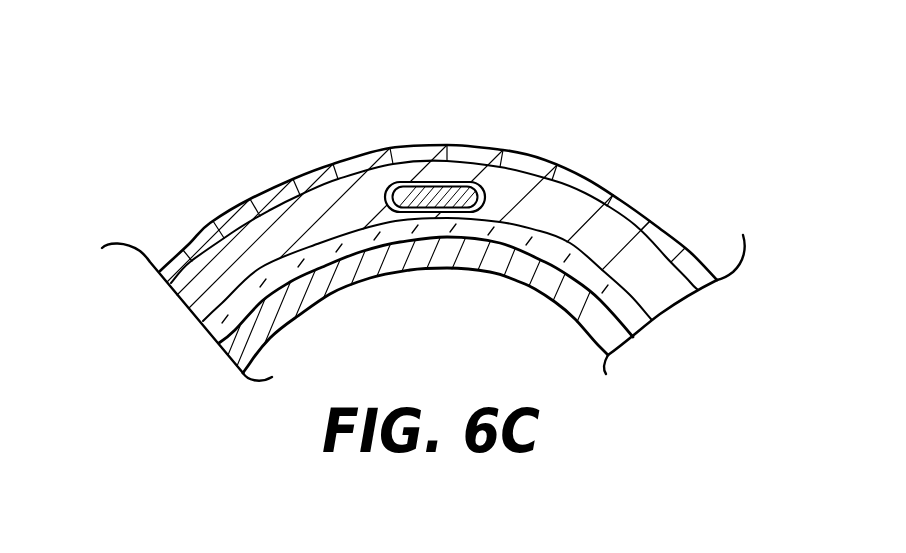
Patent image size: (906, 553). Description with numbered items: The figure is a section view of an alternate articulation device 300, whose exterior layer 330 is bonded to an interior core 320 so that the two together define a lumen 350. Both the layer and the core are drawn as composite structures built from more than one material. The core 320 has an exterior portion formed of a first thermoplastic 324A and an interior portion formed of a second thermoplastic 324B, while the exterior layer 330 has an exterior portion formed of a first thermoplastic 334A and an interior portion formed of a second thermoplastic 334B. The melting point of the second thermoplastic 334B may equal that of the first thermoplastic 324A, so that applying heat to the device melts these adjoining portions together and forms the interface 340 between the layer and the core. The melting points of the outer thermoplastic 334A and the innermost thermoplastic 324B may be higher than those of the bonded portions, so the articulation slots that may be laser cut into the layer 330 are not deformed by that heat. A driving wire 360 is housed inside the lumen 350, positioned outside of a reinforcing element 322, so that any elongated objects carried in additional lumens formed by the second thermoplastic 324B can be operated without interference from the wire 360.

The articulation device 300 is at (556, 46).
The interior core 320 is at (618, 334).
The reinforcing element 322 is at (214, 341).
The first thermoplastic 324A is at (228, 316).
The second thermoplastic 324B is at (334, 280).
The exterior layer 330 is at (643, 190).
The first thermoplastic 334A is at (190, 232).
The second thermoplastic 334B is at (198, 326).
The interface 340 is at (646, 304).
The lumen 350 is at (417, 181).
The driving wire 360 is at (457, 187).